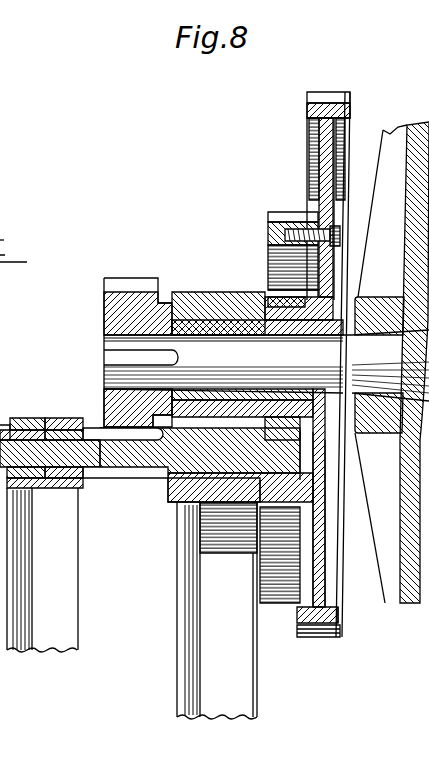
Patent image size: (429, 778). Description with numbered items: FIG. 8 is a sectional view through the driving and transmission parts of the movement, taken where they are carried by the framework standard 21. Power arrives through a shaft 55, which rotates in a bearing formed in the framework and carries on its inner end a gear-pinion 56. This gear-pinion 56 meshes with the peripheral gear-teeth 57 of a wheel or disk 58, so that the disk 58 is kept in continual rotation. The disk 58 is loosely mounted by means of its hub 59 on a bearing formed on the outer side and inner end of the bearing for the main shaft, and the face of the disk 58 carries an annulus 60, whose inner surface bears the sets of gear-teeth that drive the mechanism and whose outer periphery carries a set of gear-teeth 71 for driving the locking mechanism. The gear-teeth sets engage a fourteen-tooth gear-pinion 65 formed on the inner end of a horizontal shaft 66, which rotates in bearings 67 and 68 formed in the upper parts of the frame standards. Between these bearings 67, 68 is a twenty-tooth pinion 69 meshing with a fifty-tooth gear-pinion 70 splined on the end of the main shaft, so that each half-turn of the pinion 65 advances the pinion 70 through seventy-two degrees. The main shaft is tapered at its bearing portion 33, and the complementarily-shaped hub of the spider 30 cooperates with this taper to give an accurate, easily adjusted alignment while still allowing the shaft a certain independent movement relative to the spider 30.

The standard 21 is at (238, 610).
The spider 30 is at (382, 364).
The bearing portion 33 is at (266, 365).
The shaft 55 is at (29, 261).
The gear-pinion 56 is at (14, 222).
The peripheral gear-teeth 57 is at (310, 630).
The disk 58 is at (325, 582).
The hub 59 is at (345, 298).
The annulus 60 is at (266, 233).
The gear-pinion 65 is at (313, 473).
The horizontal shaft 66 is at (170, 510).
The bearing 67 is at (170, 482).
The bearing 68 is at (47, 417).
The pinion 69 is at (110, 473).
The gear-pinion 70 is at (141, 278).
The gear-teeth 71 is at (280, 213).